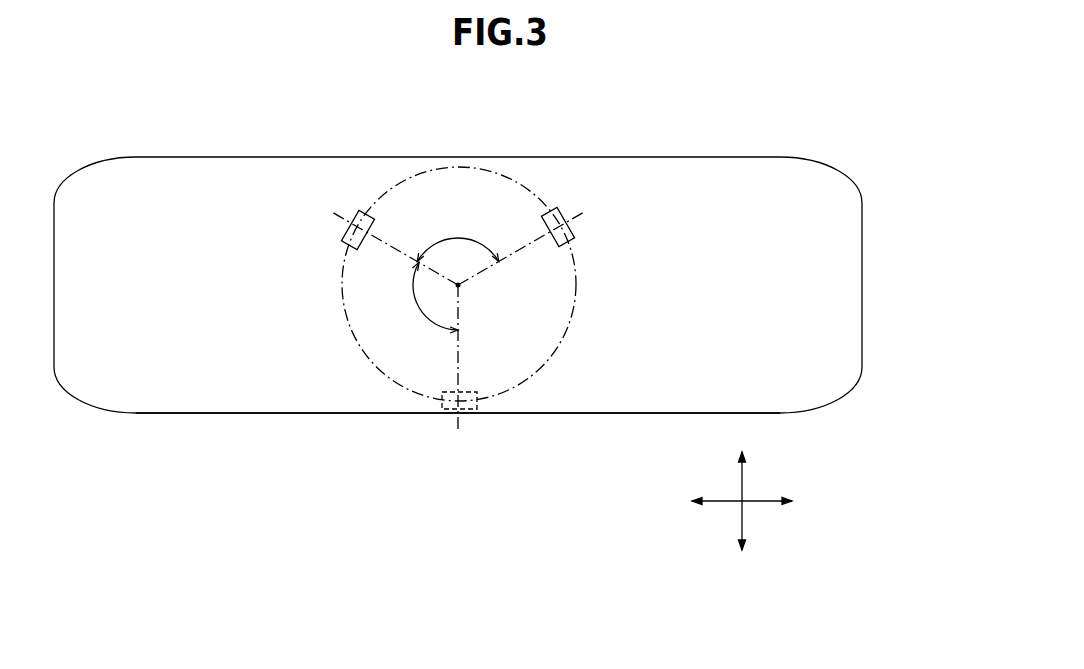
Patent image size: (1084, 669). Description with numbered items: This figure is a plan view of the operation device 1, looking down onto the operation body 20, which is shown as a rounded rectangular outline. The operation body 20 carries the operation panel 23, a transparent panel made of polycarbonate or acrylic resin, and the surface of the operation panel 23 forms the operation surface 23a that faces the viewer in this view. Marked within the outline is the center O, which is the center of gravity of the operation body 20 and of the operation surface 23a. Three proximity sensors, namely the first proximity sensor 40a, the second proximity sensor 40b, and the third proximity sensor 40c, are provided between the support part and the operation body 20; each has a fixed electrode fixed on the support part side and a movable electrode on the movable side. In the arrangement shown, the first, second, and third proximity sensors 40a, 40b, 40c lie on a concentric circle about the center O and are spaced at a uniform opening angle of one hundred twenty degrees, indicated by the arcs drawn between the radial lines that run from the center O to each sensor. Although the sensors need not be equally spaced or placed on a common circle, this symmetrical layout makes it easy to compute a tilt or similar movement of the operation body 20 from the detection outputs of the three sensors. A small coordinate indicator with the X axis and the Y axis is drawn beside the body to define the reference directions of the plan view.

The operation device 1 is at (655, 133).
The operation body 20 is at (868, 313).
The operation panel 23 is at (845, 232).
The operation surface 23a is at (642, 403).
The first proximity sensor 40a is at (450, 411).
The second proximity sensor 40b is at (574, 230).
The third proximity sensor 40c is at (342, 229).
The center O is at (462, 290).
The X axis X is at (741, 513).
The Y axis Y is at (748, 503).